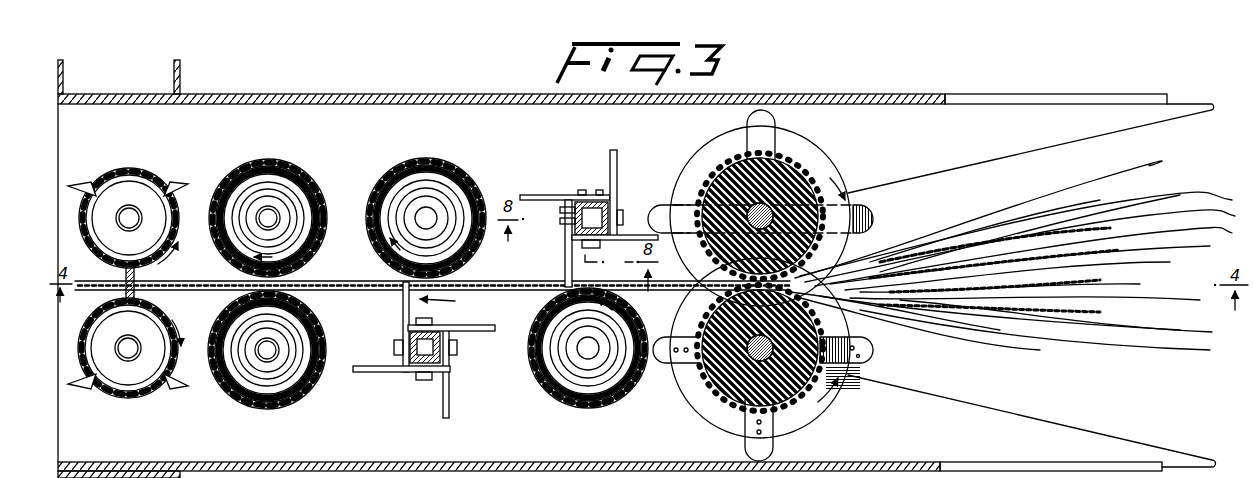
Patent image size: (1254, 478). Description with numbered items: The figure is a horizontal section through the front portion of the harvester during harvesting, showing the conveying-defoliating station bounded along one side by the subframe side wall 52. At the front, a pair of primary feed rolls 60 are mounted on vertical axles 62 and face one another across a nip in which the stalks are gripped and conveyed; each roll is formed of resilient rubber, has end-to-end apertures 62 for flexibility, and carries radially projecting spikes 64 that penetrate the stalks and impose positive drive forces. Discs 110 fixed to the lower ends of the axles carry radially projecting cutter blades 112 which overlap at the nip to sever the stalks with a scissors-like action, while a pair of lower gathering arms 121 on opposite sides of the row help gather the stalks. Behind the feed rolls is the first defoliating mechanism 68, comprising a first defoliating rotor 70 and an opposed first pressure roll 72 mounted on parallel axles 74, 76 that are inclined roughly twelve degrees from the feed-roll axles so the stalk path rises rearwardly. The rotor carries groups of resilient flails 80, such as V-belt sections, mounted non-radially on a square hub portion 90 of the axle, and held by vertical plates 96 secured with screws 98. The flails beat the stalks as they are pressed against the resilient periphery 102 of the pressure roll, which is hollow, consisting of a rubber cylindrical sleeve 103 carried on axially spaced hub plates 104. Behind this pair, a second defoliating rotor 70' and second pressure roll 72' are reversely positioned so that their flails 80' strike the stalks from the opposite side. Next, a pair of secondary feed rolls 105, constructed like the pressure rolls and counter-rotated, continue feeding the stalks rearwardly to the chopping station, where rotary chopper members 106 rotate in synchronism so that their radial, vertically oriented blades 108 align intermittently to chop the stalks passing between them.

The side wall 52 is at (428, 95).
The primary feed roll 60 is at (790, 168).
The vertical axle 62 is at (806, 176).
The spikes 64 is at (840, 328).
The first defoliating mechanism 68 is at (579, 200).
The first defoliating rotor 70 is at (635, 183).
The second defoliating rotor 70' is at (410, 368).
The first pressure roll 72 is at (580, 373).
The second pressure roll 72' is at (431, 199).
The axle of first defoliating rotor 74 is at (607, 212).
The axle of first pressure roll 76 is at (548, 390).
The flails 80 is at (554, 220).
The flails of second defoliating rotor 80' is at (438, 341).
The hub portion 90 is at (586, 205).
The vertical plates 96 is at (577, 190).
The screws 98 is at (562, 219).
The resilient periphery 102 is at (638, 392).
The rubber cylindrical sleeve 103 is at (556, 356).
The hub plates 104 is at (582, 398).
The secondary feed rolls 105 is at (292, 170).
The rotary chopper members 106 is at (148, 172).
The blades 108 is at (76, 186).
The discs 110 is at (843, 377).
The cutter blades 112 is at (870, 207).
The lower gathering arms 121 is at (1125, 118).